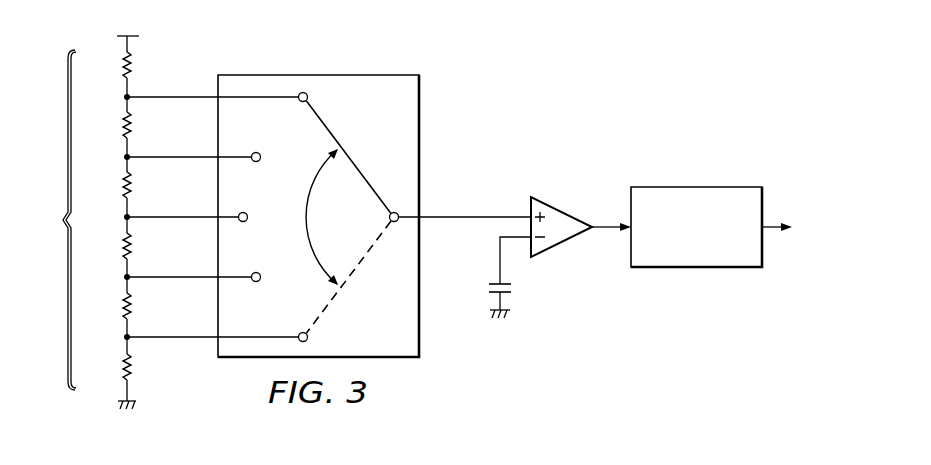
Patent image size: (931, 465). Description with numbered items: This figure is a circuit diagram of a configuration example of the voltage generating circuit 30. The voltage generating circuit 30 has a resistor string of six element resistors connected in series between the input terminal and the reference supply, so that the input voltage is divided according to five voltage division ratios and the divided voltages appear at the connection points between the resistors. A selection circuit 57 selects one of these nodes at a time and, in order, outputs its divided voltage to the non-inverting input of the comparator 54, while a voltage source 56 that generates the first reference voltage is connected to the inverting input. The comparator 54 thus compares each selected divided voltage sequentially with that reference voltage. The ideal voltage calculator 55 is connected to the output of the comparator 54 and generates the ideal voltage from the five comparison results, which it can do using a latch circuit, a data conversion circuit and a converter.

The voltage generating circuit 30 is at (572, 88).
The comparator 54 is at (563, 206).
The ideal voltage calculator 55 is at (696, 187).
The voltage source 56 is at (487, 287).
The selection circuit 57 is at (318, 75).